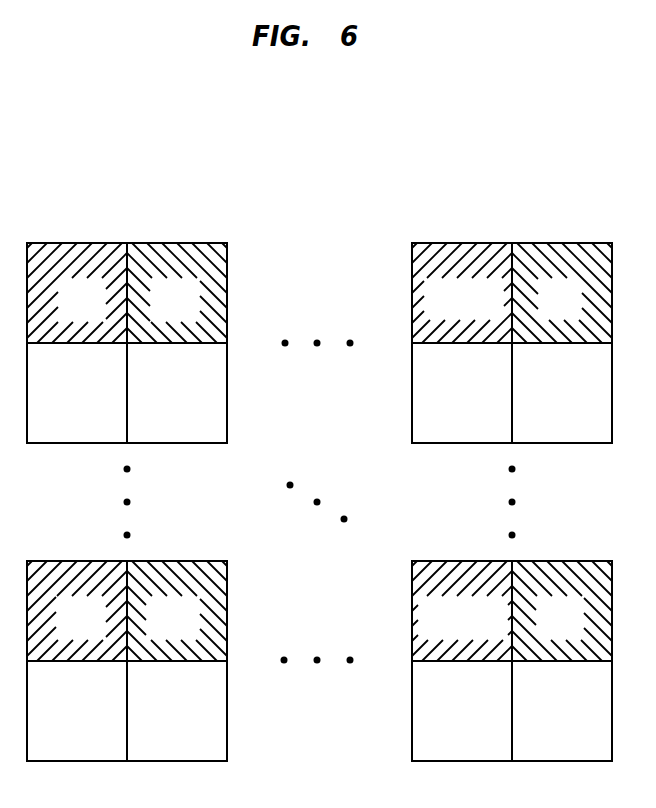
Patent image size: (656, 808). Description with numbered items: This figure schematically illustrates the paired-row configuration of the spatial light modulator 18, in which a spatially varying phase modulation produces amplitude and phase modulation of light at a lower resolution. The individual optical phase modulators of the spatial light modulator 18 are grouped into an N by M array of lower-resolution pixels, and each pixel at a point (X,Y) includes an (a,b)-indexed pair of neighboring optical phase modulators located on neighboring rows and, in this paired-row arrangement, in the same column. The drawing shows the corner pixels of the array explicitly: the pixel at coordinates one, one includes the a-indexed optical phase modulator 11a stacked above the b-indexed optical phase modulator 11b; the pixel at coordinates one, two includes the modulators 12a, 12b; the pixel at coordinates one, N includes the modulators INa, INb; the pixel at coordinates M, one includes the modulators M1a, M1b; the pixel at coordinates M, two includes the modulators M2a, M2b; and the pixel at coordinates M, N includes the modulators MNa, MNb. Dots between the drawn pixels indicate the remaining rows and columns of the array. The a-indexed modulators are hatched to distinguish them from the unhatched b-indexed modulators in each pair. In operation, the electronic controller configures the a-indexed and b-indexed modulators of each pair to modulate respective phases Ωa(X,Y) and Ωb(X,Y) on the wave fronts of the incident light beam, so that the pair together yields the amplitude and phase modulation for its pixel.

The spatial light modulator 18 is at (27, 185).
The a-indexed optical phase modulator of pixel (1,1) 11a is at (77, 293).
The b-indexed optical phase modulator of pixel (1,1) 11b is at (77, 393).
The a-indexed optical phase modulator of pixel (1,2) 12a is at (177, 293).
The b-indexed optical phase modulator of pixel (1,2) 12b is at (177, 393).
The a-indexed optical phase modulator of pixel (1,N) INa is at (562, 293).
The b-indexed optical phase modulator of pixel (1,N) INb is at (562, 393).
The a-indexed optical phase modulator of pixel (M,1) M1a is at (77, 611).
The b-indexed optical phase modulator of pixel (M,1) M1b is at (77, 711).
The a-indexed optical phase modulator of pixel (M,2) M2a is at (177, 611).
The b-indexed optical phase modulator of pixel (M,2) M2b is at (177, 711).
The a-indexed optical phase modulator of pixel (M,N) MNa is at (562, 611).
The b-indexed optical phase modulator of pixel (M,N) MNb is at (562, 711).